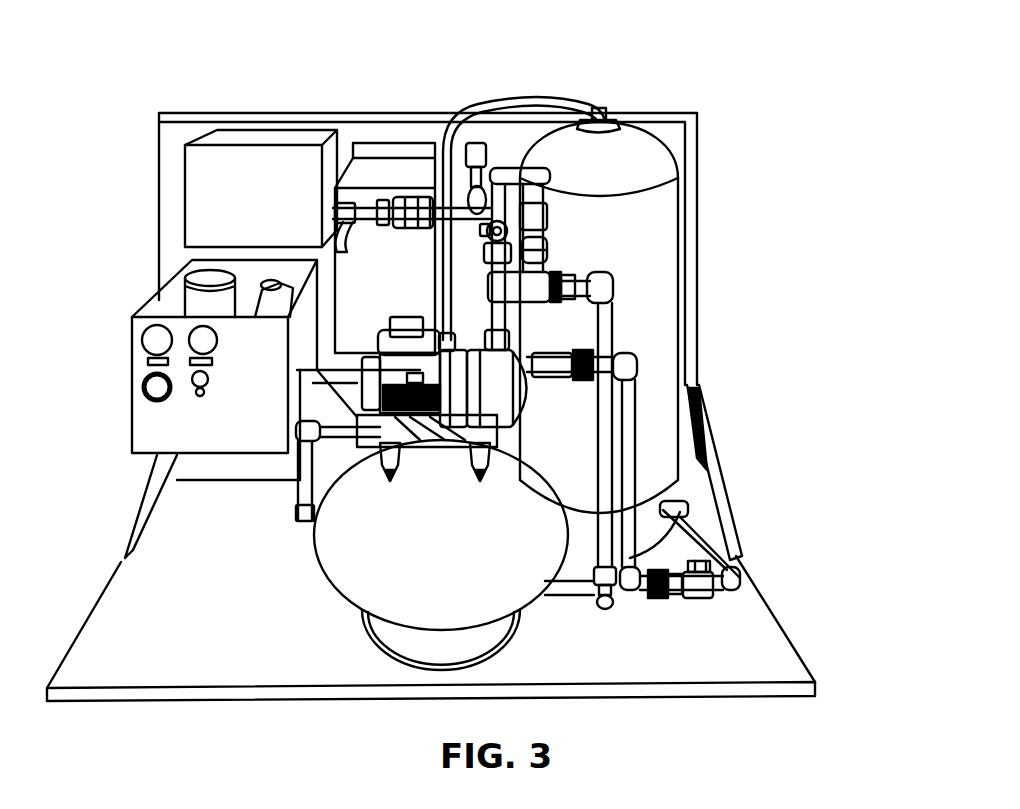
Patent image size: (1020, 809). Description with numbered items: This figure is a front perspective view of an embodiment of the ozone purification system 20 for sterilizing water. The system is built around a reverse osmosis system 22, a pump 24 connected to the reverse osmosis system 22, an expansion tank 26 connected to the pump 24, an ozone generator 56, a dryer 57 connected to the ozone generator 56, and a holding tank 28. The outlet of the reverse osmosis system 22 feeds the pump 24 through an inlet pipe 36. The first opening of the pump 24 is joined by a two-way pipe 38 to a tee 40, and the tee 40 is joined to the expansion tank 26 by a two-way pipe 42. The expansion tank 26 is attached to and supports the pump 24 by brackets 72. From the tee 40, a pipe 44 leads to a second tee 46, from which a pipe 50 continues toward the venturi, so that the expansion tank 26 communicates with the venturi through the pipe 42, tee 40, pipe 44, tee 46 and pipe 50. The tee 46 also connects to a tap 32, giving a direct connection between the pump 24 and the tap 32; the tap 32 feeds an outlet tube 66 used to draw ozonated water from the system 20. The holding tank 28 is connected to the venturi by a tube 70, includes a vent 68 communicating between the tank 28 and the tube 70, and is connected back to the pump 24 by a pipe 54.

The ozone purification system 20 is at (803, 88).
The reverse osmosis system 22 is at (152, 425).
The pump 24 is at (492, 402).
The expansion tank 26 is at (340, 565).
The holding tank 28 is at (668, 294).
The tap 32 is at (373, 212).
The inlet pipe 36 is at (314, 414).
The two-way pipe 38 is at (512, 305).
The tee 40 is at (489, 278).
The two-way pipe 42 is at (600, 497).
The pipe 44 is at (486, 233).
The tee 46 is at (541, 207).
The pipe 50 is at (542, 260).
The pipe 54 is at (624, 446).
The ozone generator 56 is at (367, 163).
The dryer 57 is at (243, 158).
The outlet tube 66 is at (350, 238).
The vent 68 is at (620, 117).
The tube 70 is at (527, 92).
The brackets 72 is at (487, 463).